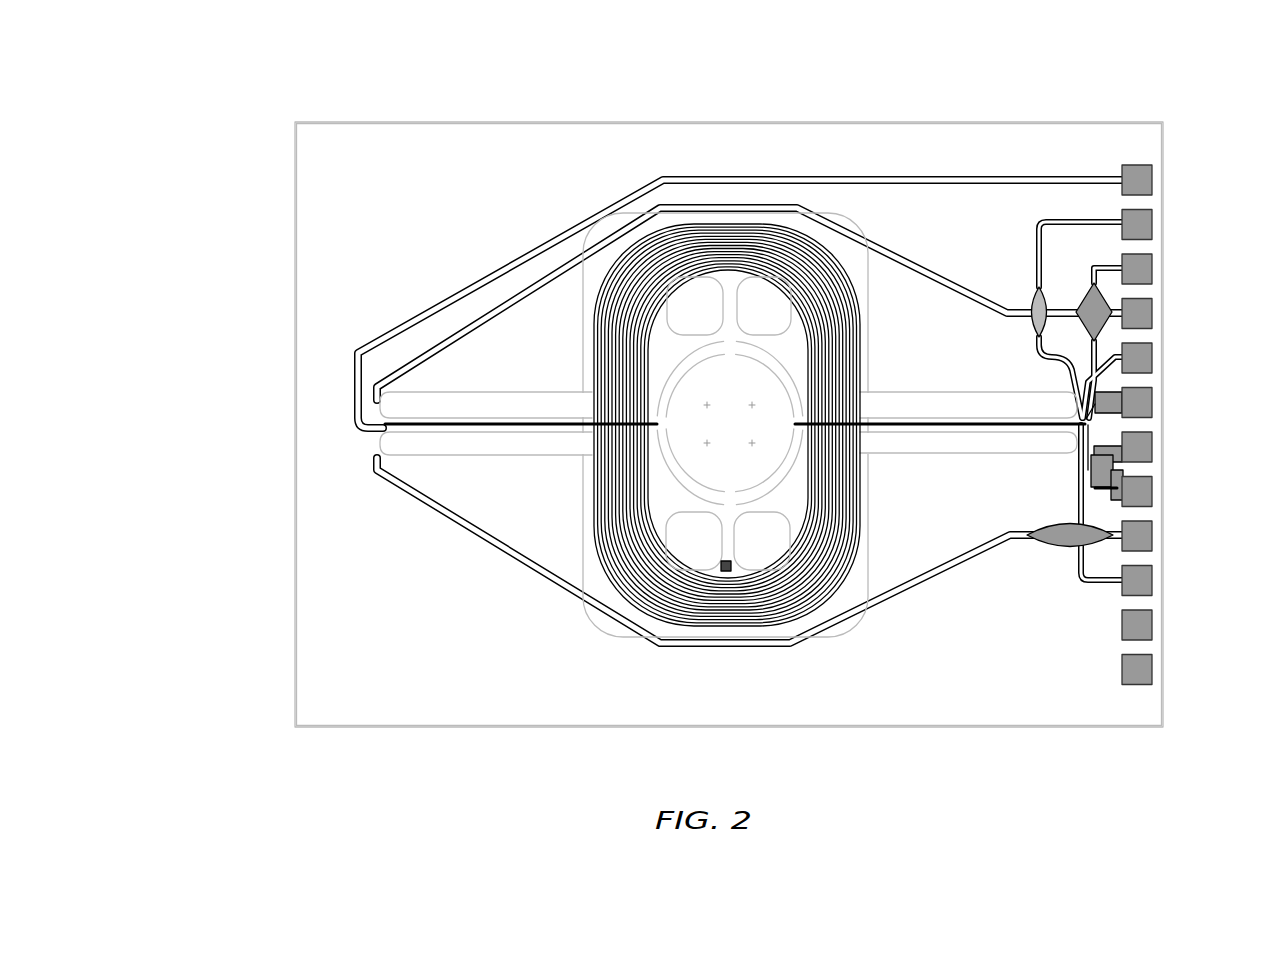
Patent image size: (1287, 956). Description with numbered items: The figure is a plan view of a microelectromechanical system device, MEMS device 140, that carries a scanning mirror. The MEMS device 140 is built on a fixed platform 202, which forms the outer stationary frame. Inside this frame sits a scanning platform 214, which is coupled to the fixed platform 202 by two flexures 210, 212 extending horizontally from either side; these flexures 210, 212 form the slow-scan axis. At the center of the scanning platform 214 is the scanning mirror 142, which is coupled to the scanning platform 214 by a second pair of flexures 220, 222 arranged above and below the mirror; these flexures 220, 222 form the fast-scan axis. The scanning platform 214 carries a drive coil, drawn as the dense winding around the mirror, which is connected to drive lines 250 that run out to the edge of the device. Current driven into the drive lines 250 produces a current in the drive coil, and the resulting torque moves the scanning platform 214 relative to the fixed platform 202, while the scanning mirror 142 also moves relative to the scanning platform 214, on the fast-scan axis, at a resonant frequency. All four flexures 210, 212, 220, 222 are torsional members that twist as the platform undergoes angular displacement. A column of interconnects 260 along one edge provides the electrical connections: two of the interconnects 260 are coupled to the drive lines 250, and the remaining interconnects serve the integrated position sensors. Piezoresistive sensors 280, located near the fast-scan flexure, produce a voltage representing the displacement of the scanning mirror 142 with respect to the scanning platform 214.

The MEMS device 140 is at (190, 171).
The scanning mirror 142 is at (746, 432).
The fixed platform 202 is at (415, 215).
The flexure 210 is at (463, 421).
The flexure 212 is at (940, 421).
The scanning platform 214 is at (852, 533).
The flexure 220 is at (737, 290).
The flexure 222 is at (737, 561).
The drive lines 250 is at (1033, 251).
The interconnects 260 is at (1181, 158).
The piezoresistive sensors 280 is at (718, 566).